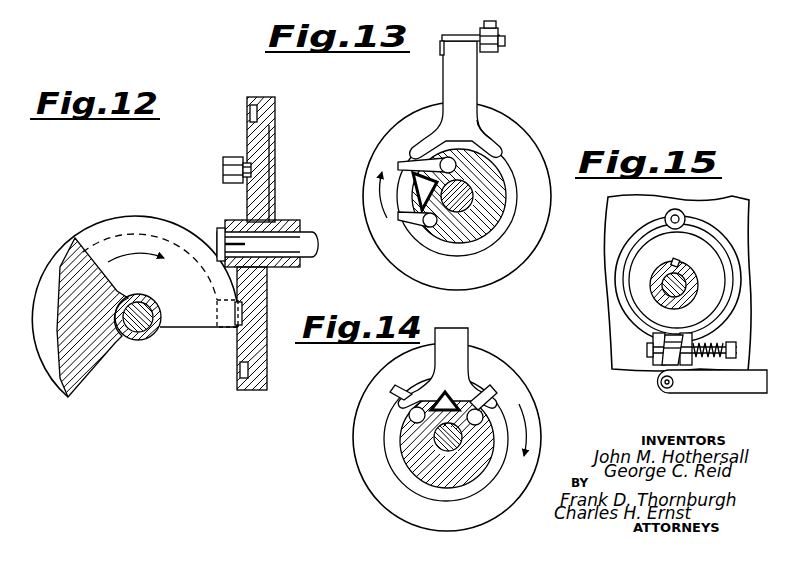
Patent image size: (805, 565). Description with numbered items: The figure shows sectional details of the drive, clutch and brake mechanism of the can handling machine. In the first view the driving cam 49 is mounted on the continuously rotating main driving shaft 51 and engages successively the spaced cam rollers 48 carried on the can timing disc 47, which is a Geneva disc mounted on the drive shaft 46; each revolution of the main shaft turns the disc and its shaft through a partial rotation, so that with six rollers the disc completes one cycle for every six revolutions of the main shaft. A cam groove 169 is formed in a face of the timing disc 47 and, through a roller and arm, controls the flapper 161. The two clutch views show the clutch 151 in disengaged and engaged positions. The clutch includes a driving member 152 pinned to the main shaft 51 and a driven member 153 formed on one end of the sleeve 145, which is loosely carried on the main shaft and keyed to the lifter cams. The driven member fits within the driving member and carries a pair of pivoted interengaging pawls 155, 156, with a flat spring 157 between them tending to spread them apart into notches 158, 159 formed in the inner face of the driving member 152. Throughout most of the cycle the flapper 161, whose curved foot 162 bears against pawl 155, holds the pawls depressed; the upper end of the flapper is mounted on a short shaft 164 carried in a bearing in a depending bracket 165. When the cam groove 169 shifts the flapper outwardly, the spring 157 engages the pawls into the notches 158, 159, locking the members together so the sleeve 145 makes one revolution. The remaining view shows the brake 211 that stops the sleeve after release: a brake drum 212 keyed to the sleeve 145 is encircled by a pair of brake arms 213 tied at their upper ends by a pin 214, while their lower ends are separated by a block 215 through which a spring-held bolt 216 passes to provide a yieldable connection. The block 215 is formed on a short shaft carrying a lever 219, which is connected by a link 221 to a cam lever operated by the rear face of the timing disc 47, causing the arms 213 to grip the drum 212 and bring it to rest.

In FIG. 12, the drive shaft 46 is at (302, 242).
In FIG. 12, the can timing disc 47 is at (270, 140).
In FIG. 12, the cam rollers 48 is at (234, 158).
In FIG. 12, the driving cam 49 is at (85, 250).
In FIG. 12, the main driving shaft 51 is at (138, 333).
In FIG. 13, the main driving shaft 51 is at (470, 195).
In FIG. 14, the main driving shaft 51 is at (447, 437).
In FIG. 15, the main driving shaft 51 is at (690, 279).
In FIG. 15, the sleeve 145 is at (660, 290).
In FIG. 13, the clutch 151 is at (540, 151).
In FIG. 14, the clutch 151 is at (371, 412).
In FIG. 13, the clutch driving member 152 is at (505, 119).
In FIG. 14, the clutch driving member 152 is at (360, 425).
In FIG. 13, the clutch driven member 153 is at (497, 225).
In FIG. 14, the clutch driven member 153 is at (416, 462).
In FIG. 13, the clutch pawl 155 is at (448, 157).
In FIG. 14, the clutch pawl 155 is at (480, 410).
In FIG. 13, the clutch pawl 156 is at (431, 228).
In FIG. 14, the clutch pawl 156 is at (425, 396).
In FIG. 13, the flat spring 157 is at (412, 199).
In FIG. 14, the flat spring 157 is at (472, 402).
In FIG. 13, the notch 158 is at (398, 165).
In FIG. 14, the notch 158 is at (498, 441).
In FIG. 13, the notch 159 is at (424, 224).
In FIG. 14, the notch 159 is at (517, 400).
In FIG. 13, the flapper 161 is at (471, 79).
In FIG. 14, the flapper 161 is at (456, 336).
In FIG. 13, the curved foot 162 is at (497, 151).
In FIG. 14, the curved foot 162 is at (446, 393).
In FIG. 13, the short shaft 164 is at (504, 45).
In FIG. 13, the depending bracket 165 is at (497, 27).
In FIG. 12, the cam groove 169 is at (250, 107).
In FIG. 15, the brake 211 is at (739, 236).
In FIG. 15, the brake drum 212 is at (643, 268).
In FIG. 15, the brake arms 213 is at (641, 246).
In FIG. 15, the pin 214 is at (684, 226).
In FIG. 15, the block 215 is at (668, 362).
In FIG. 15, the spring-held bolt 216 is at (650, 349).
In FIG. 15, the lever 219 is at (665, 389).
In FIG. 15, the link 221 is at (712, 382).